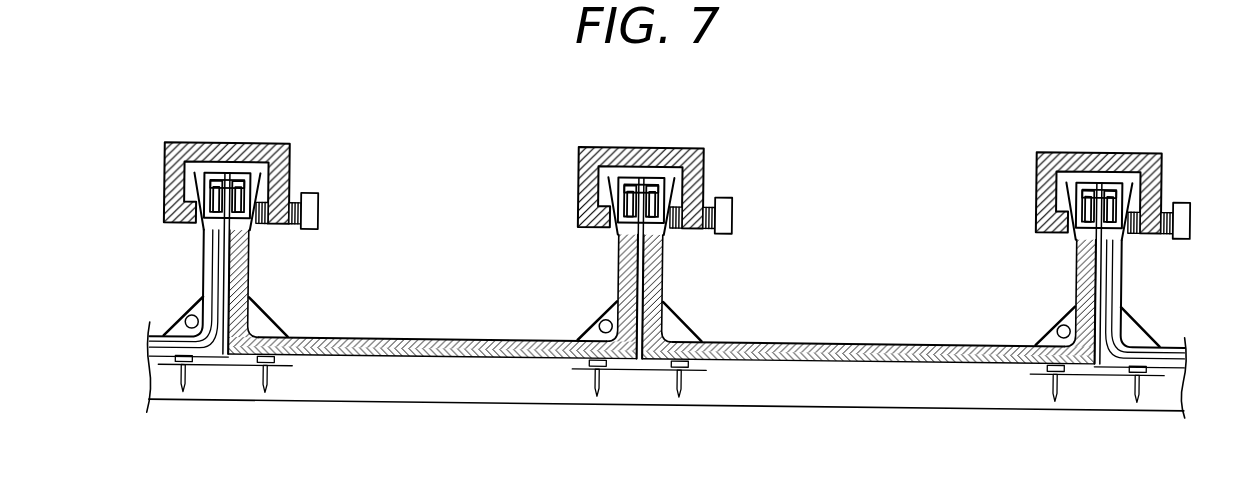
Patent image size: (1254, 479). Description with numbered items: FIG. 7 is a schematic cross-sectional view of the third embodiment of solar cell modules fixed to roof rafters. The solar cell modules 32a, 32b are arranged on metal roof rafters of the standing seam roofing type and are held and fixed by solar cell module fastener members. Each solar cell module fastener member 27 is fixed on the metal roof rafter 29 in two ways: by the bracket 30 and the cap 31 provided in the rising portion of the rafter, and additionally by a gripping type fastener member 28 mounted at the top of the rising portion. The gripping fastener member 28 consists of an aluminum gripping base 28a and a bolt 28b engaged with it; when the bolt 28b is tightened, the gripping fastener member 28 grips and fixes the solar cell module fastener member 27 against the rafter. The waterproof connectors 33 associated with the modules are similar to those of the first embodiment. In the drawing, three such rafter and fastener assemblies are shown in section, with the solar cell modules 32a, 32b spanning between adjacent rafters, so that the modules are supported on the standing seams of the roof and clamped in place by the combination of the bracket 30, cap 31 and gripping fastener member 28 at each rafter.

The solar cell module fastener member 27 is at (689, 323).
The gripping type fastener member 28 is at (577, 141).
The aluminum gripping base 28a is at (703, 150).
The bolt 28b is at (732, 207).
The metal roof rafter 29 is at (657, 236).
The bracket 30 is at (648, 180).
The cap 31 is at (637, 180).
The solar cell module 32a is at (838, 343).
The solar cell module 32b is at (782, 360).
The waterproof connector 33 is at (1056, 329).